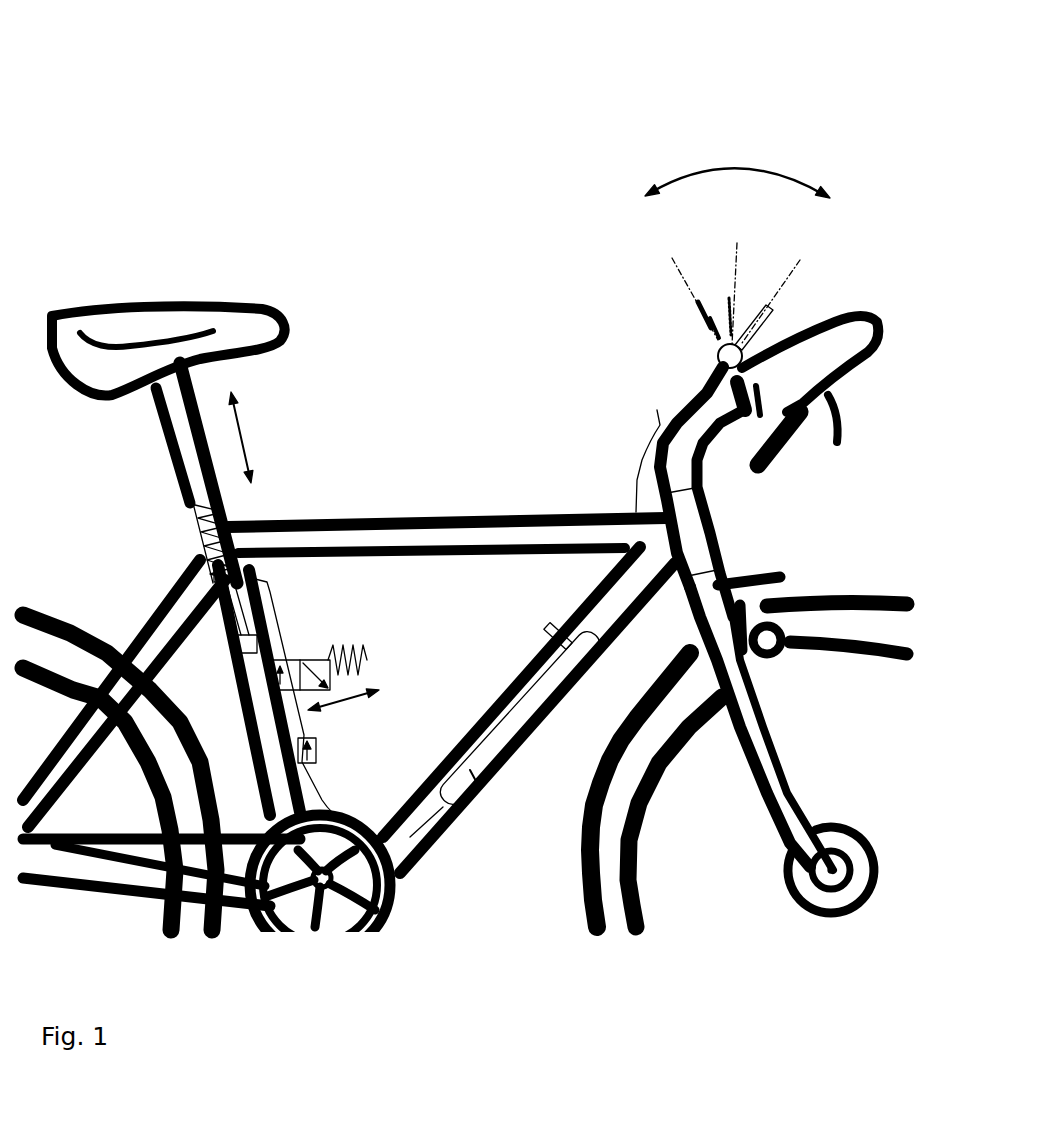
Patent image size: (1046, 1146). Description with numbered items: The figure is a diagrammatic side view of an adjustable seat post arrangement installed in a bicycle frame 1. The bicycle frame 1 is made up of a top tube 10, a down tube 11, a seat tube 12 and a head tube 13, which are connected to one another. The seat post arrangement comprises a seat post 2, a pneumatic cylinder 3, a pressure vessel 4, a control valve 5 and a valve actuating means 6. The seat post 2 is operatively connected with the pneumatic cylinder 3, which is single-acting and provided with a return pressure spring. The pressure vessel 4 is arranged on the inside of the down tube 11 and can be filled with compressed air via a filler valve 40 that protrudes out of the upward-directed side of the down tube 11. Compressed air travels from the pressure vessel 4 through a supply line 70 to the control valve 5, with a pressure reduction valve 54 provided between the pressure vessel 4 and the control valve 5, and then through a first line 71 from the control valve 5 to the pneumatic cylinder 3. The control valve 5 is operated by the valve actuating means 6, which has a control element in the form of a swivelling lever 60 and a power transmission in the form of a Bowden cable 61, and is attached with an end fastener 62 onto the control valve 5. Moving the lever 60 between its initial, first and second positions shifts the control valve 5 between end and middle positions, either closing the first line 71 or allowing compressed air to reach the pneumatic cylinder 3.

The bicycle frame 1 is at (459, 290).
The seat post 2 is at (180, 432).
The pneumatic cylinder 3 is at (192, 553).
The pressure vessel 4 is at (475, 785).
The control valve 5 is at (305, 645).
The valve actuating means 6 is at (741, 100).
The top tube 10 is at (477, 543).
The down tube 11 is at (515, 745).
The seat tube 12 is at (233, 670).
The head tube 13 is at (687, 527).
The filler valve 40 is at (560, 630).
The pressure reduction valve 54 is at (317, 752).
The swivelling lever 60 is at (773, 313).
The Bowden cable 61 is at (657, 410).
The end fastener 62 is at (557, 633).
The supply line 70 is at (410, 838).
The first line 71 is at (268, 596).